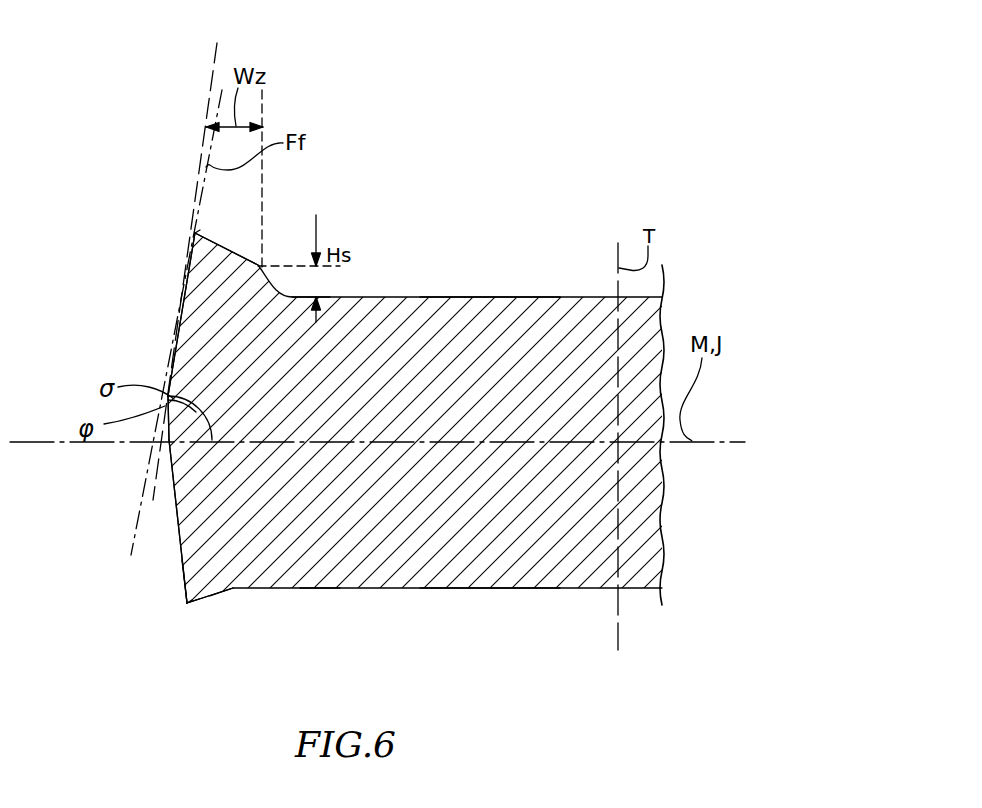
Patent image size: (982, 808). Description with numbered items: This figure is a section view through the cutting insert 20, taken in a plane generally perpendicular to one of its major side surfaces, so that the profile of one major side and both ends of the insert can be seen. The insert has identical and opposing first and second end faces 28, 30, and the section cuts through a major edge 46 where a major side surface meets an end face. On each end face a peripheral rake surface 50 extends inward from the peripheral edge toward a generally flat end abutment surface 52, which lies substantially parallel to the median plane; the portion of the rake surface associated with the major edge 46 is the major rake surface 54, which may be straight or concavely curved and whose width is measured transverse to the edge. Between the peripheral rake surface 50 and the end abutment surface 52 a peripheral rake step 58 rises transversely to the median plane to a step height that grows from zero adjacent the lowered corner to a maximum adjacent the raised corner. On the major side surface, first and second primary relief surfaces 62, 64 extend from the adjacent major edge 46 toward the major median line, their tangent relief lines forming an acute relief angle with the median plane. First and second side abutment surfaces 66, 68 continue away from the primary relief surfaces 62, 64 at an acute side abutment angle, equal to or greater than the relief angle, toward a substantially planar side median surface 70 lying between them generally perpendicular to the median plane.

The cutting insert 20 is at (578, 128).
The first end face 28 is at (481, 297).
The second end face 30 is at (500, 592).
The major edge 46 is at (200, 230).
The peripheral rake surface 50 is at (205, 615).
The end abutment surface 52 is at (417, 297).
The major rake surface 54 is at (215, 610).
The peripheral rake step 58 is at (232, 589).
The first primary relief surface 62 is at (195, 237).
The second primary relief surface 64 is at (182, 572).
The first side abutment surface 66 is at (168, 396).
The second side abutment surface 68 is at (178, 522).
The side median surface 70 is at (170, 466).